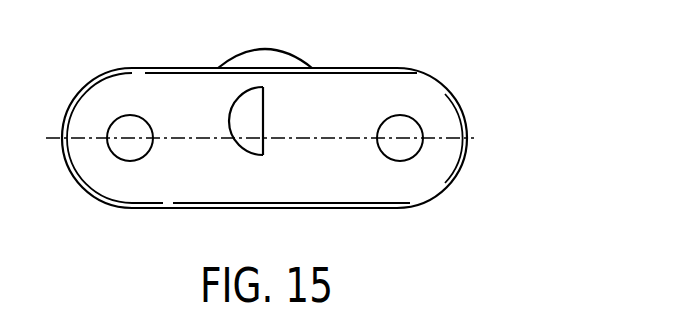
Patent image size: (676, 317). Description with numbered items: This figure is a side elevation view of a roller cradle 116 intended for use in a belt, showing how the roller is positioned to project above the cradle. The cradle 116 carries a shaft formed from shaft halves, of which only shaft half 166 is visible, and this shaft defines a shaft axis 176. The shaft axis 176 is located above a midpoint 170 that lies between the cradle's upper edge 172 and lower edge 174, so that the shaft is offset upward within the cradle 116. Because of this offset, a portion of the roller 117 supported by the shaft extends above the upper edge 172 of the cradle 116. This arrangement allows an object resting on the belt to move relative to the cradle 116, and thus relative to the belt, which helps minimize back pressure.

The roller cradle 116 is at (477, 50).
The roller 117 is at (257, 50).
The shaft half 166 is at (247, 115).
The midpoint 170 is at (298, 137).
The upper edge 172 is at (373, 68).
The lower edge 174 is at (365, 208).
The shaft axis 176 is at (270, 118).